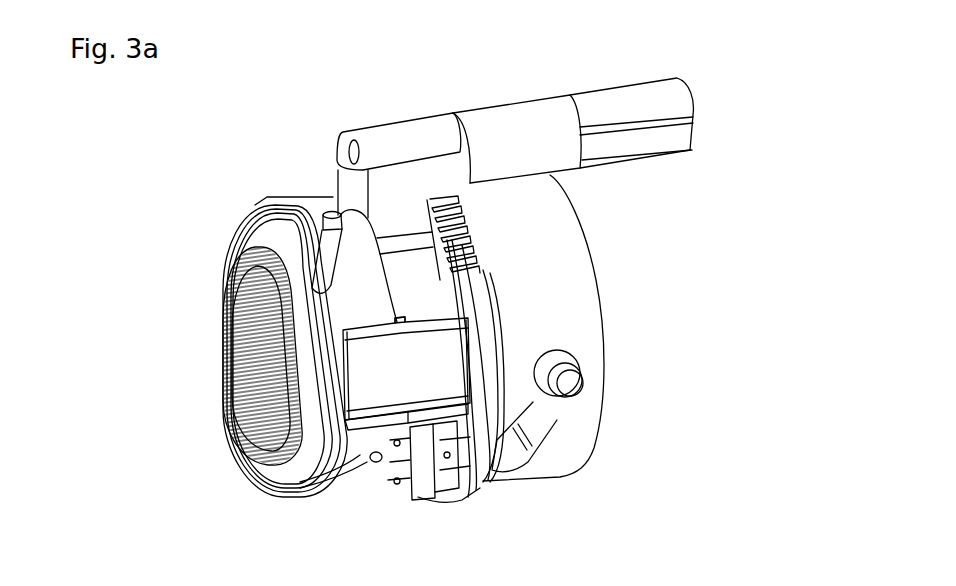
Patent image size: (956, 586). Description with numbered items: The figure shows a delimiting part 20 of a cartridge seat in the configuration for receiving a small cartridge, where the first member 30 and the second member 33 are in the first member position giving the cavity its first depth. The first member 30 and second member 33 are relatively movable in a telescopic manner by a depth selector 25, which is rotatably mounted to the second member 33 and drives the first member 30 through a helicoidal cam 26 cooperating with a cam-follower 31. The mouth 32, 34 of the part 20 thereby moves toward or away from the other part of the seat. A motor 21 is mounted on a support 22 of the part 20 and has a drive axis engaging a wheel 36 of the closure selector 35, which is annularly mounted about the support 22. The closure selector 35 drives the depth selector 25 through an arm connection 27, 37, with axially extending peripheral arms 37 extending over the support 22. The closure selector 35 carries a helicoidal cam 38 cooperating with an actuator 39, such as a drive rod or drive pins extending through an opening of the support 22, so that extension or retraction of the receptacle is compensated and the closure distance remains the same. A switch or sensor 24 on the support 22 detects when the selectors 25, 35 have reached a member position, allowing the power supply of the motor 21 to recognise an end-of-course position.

The first part 20 is at (757, 50).
The motor 21 is at (604, 106).
The support 22 is at (399, 135).
The switch or sensor 24 is at (443, 473).
The depth selector 25 is at (244, 226).
The helicoidal cam 26 is at (320, 242).
The arm connection 27 is at (393, 320).
The first member 30 is at (323, 265).
The cam-follower 31 is at (332, 214).
The mouth 32 is at (283, 462).
The second member 33 is at (268, 376).
The mouth 34 is at (240, 406).
The closure selector 35 is at (594, 270).
The wheel 36 is at (469, 240).
The axially extending peripheral arm 37 is at (437, 373).
The helicoidal cam 38 is at (558, 425).
The actuator 39 is at (578, 383).